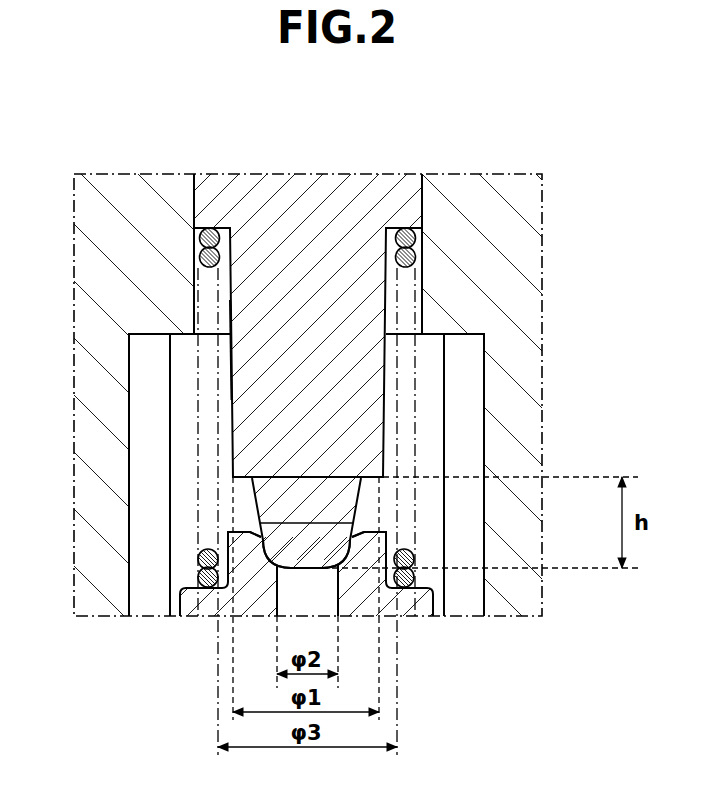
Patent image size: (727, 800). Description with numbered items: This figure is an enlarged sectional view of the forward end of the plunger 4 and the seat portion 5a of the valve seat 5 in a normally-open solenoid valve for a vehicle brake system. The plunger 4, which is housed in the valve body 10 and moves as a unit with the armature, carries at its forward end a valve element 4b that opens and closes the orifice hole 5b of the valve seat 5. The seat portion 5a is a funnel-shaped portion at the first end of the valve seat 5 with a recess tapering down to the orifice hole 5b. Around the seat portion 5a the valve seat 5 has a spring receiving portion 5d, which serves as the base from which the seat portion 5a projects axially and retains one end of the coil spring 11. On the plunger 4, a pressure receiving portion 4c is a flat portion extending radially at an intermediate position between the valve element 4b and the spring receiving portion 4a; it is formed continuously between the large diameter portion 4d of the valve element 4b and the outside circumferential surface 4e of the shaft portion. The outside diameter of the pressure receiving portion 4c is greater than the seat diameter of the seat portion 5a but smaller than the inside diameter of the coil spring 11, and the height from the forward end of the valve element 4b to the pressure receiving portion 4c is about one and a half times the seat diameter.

The plunger 4 is at (388, 202).
The spring receiving portion 4a is at (422, 237).
The valve element 4b is at (352, 492).
The pressure receiving portion 4c is at (235, 480).
The large diameter portion 4d is at (345, 504).
The outside circumferential surface 4e is at (230, 390).
The valve seat 5 is at (194, 600).
The seat portion 5a is at (268, 552).
The orifice hole 5b is at (322, 600).
The spring receiving portion 5d is at (423, 600).
The valve body 10 is at (100, 270).
The coil spring 11 is at (415, 363).